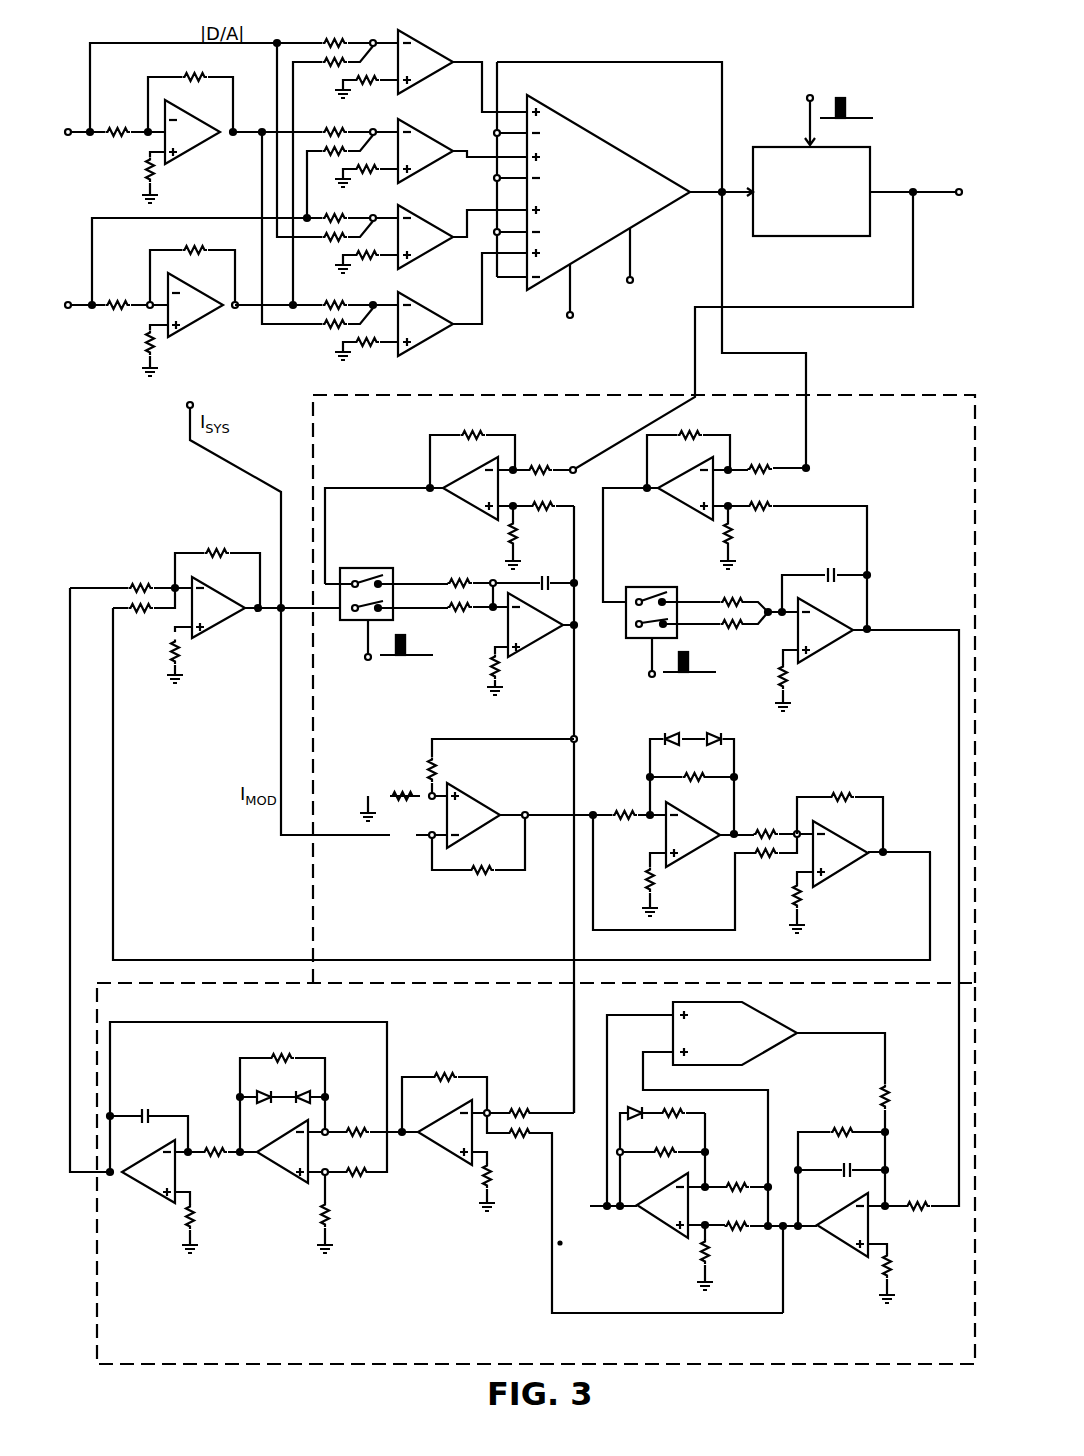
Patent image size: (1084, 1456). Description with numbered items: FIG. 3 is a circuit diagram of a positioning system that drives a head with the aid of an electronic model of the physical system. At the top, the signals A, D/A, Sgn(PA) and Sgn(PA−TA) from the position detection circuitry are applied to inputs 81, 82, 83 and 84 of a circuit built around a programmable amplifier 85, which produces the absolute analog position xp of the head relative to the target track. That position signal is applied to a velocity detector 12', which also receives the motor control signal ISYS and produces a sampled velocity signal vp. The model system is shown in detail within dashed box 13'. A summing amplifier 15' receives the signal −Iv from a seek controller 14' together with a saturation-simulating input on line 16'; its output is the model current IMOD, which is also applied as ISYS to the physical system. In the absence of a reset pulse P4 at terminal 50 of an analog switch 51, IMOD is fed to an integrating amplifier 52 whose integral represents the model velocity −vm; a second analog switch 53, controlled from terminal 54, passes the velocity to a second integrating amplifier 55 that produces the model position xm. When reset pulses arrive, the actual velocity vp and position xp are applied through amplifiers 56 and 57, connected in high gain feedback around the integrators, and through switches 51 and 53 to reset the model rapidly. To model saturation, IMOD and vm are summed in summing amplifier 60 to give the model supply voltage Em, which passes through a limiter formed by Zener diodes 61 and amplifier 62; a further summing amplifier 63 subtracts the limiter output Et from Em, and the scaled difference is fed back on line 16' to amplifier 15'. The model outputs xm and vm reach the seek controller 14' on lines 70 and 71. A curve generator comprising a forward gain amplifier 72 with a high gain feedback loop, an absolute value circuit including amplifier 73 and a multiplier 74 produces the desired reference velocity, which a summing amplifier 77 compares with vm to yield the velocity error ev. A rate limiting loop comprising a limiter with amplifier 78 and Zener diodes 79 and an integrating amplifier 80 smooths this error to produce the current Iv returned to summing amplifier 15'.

The input 82 is at (69, 123).
The input 81 is at (69, 298).
The programmable amplifier 85 is at (603, 141).
The input 83 is at (633, 278).
The input 84 is at (567, 313).
The velocity detector 12' is at (850, 173).
The model system 13' is at (644, 675).
The amplifier 56 is at (475, 502).
The amplifier 57 is at (693, 502).
The analog switch 51 is at (355, 568).
The terminal 50 is at (366, 655).
The analog switch 53 is at (640, 587).
The terminal 54 is at (649, 672).
The integrating amplifier 52 is at (528, 639).
The second integrating amplifier 55 is at (820, 648).
The summing amplifier 15' is at (205, 616).
The summing amplifier 60 is at (470, 802).
The Zener diodes 61 is at (672, 736).
The amplifier 62 is at (685, 850).
The summing amplifier 63 is at (833, 868).
The line 16' is at (521, 784).
The seek controller 14' is at (523, 1173).
The integrating amplifier 80 is at (158, 1185).
The amplifier 78 is at (290, 1167).
The Zener diodes 79 is at (302, 1097).
The summing amplifier 77 is at (448, 1148).
The line 71 is at (574, 1013).
The line 70 is at (959, 1012).
The multiplier 74 is at (766, 1018).
The amplifier 73 is at (666, 1228).
The forward gain amplifier 72 is at (850, 1240).